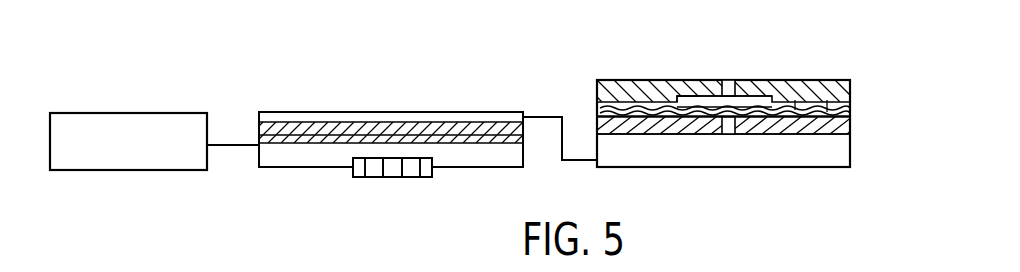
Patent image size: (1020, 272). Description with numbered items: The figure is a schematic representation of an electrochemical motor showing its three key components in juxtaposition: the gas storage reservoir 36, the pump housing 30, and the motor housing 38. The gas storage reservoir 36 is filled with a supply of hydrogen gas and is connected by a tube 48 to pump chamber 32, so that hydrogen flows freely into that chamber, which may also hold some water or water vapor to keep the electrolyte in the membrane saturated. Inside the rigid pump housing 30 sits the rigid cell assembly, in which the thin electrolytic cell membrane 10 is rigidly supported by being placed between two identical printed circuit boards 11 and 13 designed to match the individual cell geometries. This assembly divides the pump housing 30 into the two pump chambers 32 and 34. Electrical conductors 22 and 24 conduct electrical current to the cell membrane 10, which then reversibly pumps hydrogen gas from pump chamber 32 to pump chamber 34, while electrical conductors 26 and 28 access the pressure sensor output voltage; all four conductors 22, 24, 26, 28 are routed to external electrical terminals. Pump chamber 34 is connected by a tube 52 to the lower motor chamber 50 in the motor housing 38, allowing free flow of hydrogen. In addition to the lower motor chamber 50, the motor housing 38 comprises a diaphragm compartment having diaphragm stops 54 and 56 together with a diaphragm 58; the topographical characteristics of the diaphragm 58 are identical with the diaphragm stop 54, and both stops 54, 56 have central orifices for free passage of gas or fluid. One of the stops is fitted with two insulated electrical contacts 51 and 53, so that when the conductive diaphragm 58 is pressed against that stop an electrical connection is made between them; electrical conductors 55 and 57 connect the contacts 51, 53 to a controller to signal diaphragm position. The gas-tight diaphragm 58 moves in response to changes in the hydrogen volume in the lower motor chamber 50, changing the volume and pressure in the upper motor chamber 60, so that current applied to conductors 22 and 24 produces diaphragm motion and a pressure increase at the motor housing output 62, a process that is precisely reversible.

The cell membrane 10 is at (257, 125).
The printed circuit board 11 is at (318, 115).
The printed circuit board 13 is at (343, 141).
The electrical conductor 22 is at (402, 177).
The electrical conductor 24 is at (418, 177).
The electrical conductor 26 is at (383, 177).
The electrical conductor 28 is at (365, 177).
The pump housing 30 is at (483, 168).
The pump chamber 32 is at (283, 163).
The pump chamber 34 is at (422, 113).
The gas storage reservoir 36 is at (152, 113).
The motor housing 38 is at (713, 168).
The tube 48 is at (238, 144).
The lower motor chamber 50 is at (623, 155).
The insulated electrical contact 51 is at (789, 122).
The tube 52 is at (543, 116).
The insulated electrical contact 53 is at (812, 123).
The diaphragm stop 54 is at (663, 130).
The electrical conductor 55 is at (795, 108).
The diaphragm stop 56 is at (623, 82).
The electrical conductor 57 is at (827, 110).
The diaphragm 58 is at (685, 97).
The upper motor chamber 60 is at (751, 100).
The motor housing output 62 is at (723, 81).